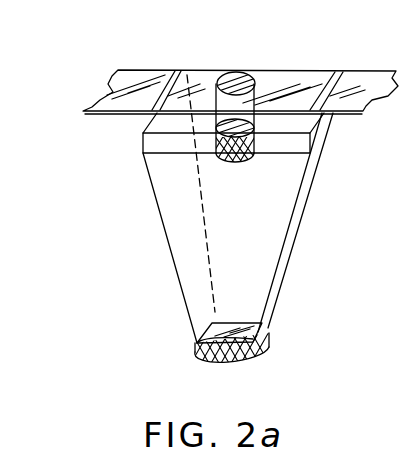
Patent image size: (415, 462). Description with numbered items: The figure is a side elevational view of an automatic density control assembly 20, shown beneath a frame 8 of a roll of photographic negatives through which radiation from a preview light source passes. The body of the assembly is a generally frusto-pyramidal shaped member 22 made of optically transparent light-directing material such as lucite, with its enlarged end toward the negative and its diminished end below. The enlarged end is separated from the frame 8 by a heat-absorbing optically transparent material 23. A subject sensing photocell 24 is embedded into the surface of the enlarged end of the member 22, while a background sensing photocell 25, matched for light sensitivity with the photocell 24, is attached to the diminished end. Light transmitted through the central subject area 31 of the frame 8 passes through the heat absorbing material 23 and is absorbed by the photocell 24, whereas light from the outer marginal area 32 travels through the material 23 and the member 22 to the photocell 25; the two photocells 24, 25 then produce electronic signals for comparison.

The frame 8 is at (360, 82).
The automatic density control assembly 20 is at (99, 195).
The frusto-pyramidal shaped member 22 is at (182, 263).
The heat-absorbing optically transparent material 23 is at (324, 124).
The photocell 24 is at (250, 158).
The photocell 25 is at (256, 343).
The central subject area 31 is at (240, 73).
The outer marginal area 32 is at (193, 72).